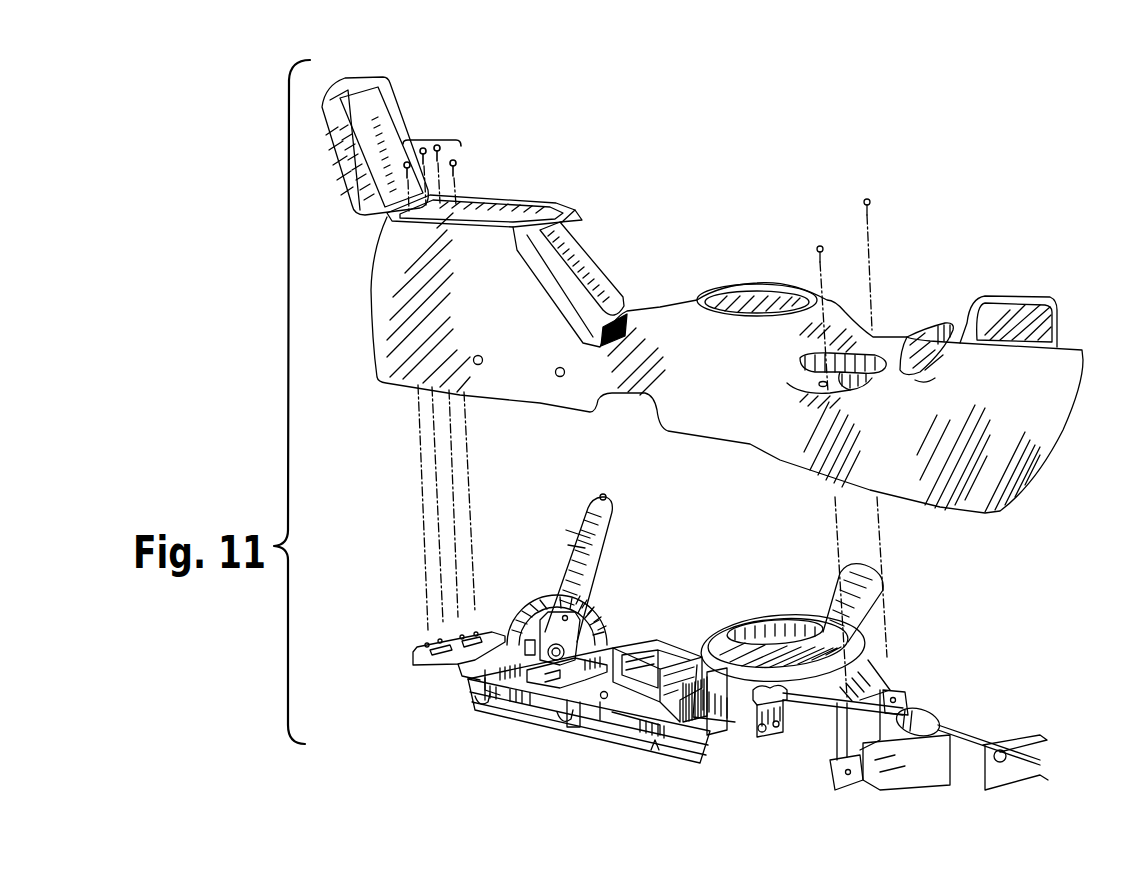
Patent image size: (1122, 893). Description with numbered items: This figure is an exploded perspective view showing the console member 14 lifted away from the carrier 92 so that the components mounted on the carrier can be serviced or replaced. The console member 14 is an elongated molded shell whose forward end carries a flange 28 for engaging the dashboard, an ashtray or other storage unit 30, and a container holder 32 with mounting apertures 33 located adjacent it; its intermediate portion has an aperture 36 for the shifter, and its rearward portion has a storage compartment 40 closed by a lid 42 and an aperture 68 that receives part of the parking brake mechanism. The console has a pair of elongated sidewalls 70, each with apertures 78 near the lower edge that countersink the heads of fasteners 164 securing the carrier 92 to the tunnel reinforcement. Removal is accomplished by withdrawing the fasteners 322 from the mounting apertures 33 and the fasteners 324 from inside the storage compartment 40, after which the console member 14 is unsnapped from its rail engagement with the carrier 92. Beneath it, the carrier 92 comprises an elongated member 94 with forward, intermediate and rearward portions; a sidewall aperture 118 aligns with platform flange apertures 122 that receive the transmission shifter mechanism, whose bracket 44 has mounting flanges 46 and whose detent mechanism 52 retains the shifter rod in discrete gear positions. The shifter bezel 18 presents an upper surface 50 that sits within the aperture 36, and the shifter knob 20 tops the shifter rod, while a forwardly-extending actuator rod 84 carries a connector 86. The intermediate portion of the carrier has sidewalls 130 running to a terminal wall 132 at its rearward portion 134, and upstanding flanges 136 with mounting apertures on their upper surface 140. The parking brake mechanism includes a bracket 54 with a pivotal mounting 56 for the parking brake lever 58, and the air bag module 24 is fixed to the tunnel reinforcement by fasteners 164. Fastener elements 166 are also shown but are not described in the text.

The console member 14 is at (712, 281).
The shifter bezel 18 is at (730, 624).
The shifter knob 20 is at (888, 575).
The air bag module 24 is at (660, 648).
The flange 28 is at (1040, 338).
The ashtray or other storage unit 30 is at (945, 323).
The container holder 32 is at (868, 378).
The mounting apertures 33 is at (805, 392).
The aperture 36 is at (740, 290).
The storage compartment 40 is at (372, 281).
The lid 42 is at (373, 105).
The bracket 44 is at (830, 760).
The mounting flanges 46 is at (790, 738).
The upper surface 50 is at (765, 620).
The detent mechanism 52 is at (750, 712).
The bracket 54 is at (512, 630).
The pivotal mounting 56 is at (545, 612).
The parking brake lever 58 is at (585, 535).
The aperture 68 is at (600, 268).
The sidewalls 70 is at (1030, 300).
The apertures 78 is at (480, 365).
The actuator rod 84 is at (905, 705).
The connector 86 is at (935, 722).
The carrier 92 is at (655, 742).
The elongated member 94 is at (634, 735).
The aperture 118 is at (758, 737).
The apertures 122 is at (764, 735).
The sidewalls 130 is at (615, 660).
The terminal wall 132 is at (574, 712).
The rearward portion 134 is at (600, 640).
The upstanding flanges 136 is at (688, 672).
The upper surface 140 is at (718, 735).
The fasteners 164 is at (604, 700).
The mounting tabs 166 is at (480, 702).
The fasteners 322 is at (818, 243).
The fasteners 324 is at (430, 138).